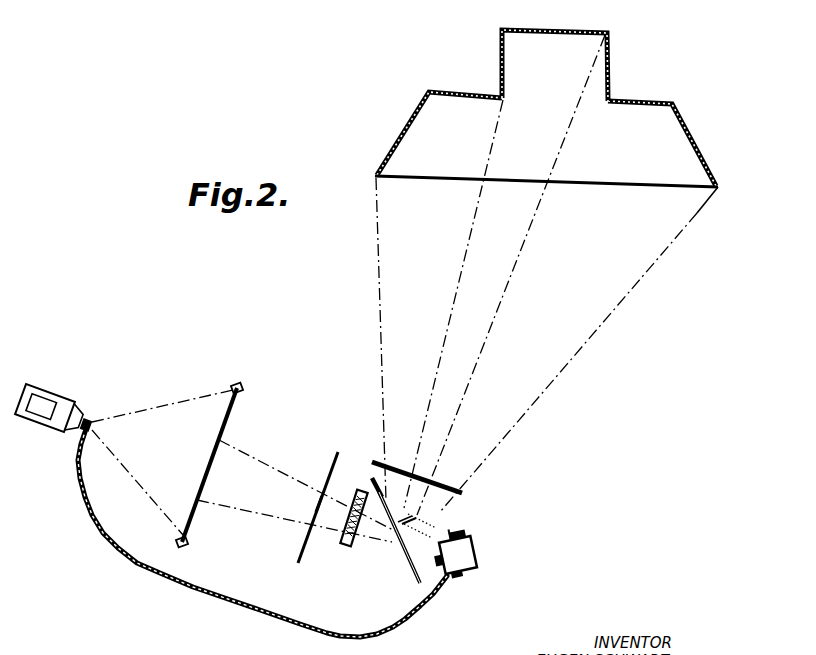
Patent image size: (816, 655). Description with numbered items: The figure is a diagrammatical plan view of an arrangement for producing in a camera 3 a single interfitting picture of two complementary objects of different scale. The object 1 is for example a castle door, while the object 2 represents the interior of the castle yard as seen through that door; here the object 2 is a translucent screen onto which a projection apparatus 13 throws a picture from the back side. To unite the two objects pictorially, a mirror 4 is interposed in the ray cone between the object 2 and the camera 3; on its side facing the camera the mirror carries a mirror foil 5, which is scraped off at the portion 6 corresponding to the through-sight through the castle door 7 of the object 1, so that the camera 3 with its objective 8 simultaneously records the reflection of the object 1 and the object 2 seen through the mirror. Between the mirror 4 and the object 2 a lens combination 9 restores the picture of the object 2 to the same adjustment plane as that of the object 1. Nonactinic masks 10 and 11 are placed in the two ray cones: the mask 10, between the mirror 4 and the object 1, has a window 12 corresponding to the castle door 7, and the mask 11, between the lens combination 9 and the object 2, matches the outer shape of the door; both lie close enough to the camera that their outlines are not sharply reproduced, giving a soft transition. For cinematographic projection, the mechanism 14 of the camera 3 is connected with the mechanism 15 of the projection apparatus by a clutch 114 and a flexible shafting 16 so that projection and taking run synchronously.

The object 1 is at (546, 139).
The castle door 7 is at (555, 65).
The object 2 is at (226, 421).
The projection apparatus 13 is at (52, 404).
The mechanism of the projection apparatus 15 is at (82, 429).
The flexible shafting 16 is at (262, 534).
The nonactinic mask 10 is at (309, 536).
The window 12 is at (320, 506).
The lens combination 9 is at (351, 540).
The mirror 4 is at (408, 558).
The mirror foil 5 is at (410, 530).
The portion 6 is at (412, 524).
The nonactinic mask 11 is at (404, 478).
The camera 3 is at (458, 555).
The mechanism of the camera 14 is at (462, 528).
The objective 8 is at (440, 560).
The clutch 114 is at (456, 575).